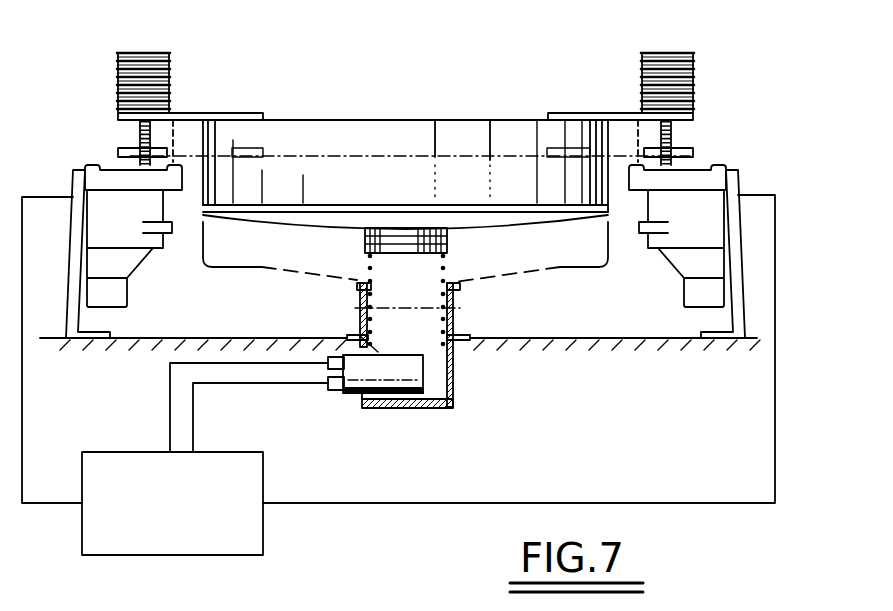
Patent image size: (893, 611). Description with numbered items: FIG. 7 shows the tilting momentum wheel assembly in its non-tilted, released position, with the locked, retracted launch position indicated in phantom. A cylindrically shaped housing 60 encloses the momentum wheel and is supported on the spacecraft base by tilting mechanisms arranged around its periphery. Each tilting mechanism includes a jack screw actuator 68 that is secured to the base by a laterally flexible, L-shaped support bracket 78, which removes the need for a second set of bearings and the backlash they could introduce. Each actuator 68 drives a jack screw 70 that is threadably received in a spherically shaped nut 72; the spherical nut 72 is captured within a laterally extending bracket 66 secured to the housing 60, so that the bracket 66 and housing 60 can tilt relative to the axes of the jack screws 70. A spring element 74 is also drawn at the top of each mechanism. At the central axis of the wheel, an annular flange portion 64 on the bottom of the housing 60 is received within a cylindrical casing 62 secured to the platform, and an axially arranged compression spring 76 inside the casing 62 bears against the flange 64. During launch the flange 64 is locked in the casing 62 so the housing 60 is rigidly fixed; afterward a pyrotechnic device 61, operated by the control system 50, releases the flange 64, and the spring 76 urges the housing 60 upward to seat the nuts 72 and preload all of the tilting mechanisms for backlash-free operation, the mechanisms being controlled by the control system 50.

The control system 50 is at (80, 557).
The housing 60 is at (441, 120).
The pyrotechnic device 61 is at (352, 395).
The cylindrical casing 62 is at (452, 315).
The annular flange portion 64 is at (365, 240).
The laterally extending bracket 66 is at (241, 113).
The jack screw actuator 68 is at (147, 247).
The jack screw 70 is at (138, 133).
The spherical nut 72 is at (168, 96).
The spring 74 is at (118, 63).
The compression spring 76 is at (447, 265).
The laterally flexible support bracket 78 is at (68, 275).